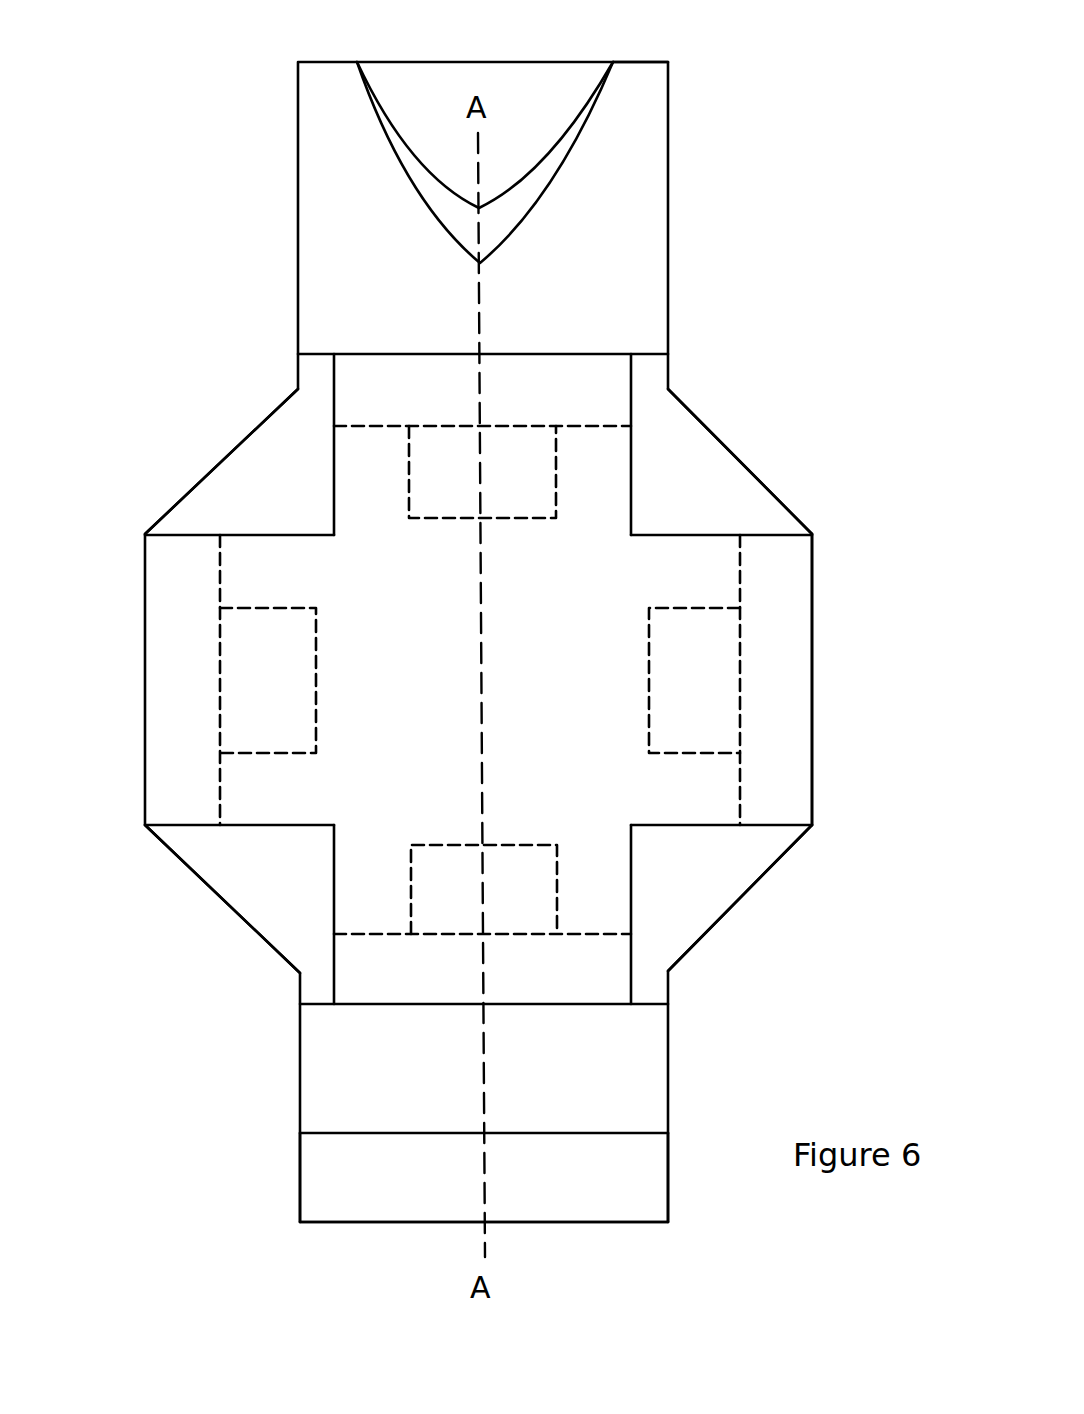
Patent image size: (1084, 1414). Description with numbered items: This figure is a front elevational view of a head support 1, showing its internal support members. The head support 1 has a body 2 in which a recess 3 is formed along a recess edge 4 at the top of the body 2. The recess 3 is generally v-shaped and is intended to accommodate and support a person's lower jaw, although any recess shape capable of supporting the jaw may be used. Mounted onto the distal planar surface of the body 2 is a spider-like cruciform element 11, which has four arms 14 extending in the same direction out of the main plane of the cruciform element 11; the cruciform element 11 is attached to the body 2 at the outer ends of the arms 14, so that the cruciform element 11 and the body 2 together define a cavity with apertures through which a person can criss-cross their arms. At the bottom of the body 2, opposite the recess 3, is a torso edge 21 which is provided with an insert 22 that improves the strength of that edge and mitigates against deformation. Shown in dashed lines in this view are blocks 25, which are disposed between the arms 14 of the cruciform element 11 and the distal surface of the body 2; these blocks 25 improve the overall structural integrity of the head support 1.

The head support 1 is at (532, 642).
The body 2 is at (736, 457).
The recess 3 is at (420, 93).
The recess edge 4 is at (638, 60).
The spider-like cruciform element 11 is at (723, 803).
The arms 14 is at (178, 813).
The torso edge 21 is at (400, 1224).
The insert 22 is at (649, 1064).
The blocks 25 is at (535, 455).